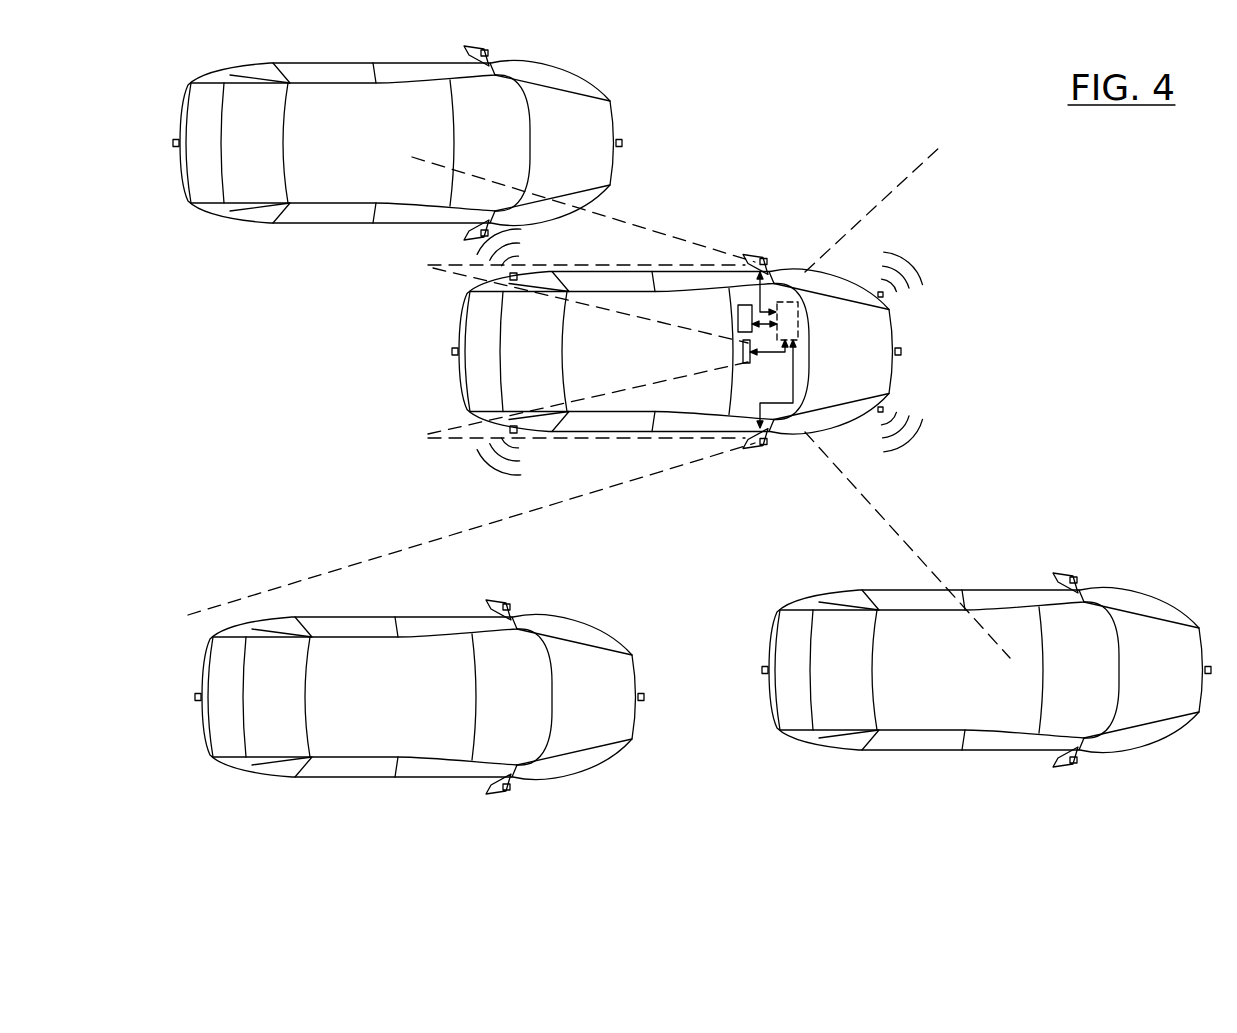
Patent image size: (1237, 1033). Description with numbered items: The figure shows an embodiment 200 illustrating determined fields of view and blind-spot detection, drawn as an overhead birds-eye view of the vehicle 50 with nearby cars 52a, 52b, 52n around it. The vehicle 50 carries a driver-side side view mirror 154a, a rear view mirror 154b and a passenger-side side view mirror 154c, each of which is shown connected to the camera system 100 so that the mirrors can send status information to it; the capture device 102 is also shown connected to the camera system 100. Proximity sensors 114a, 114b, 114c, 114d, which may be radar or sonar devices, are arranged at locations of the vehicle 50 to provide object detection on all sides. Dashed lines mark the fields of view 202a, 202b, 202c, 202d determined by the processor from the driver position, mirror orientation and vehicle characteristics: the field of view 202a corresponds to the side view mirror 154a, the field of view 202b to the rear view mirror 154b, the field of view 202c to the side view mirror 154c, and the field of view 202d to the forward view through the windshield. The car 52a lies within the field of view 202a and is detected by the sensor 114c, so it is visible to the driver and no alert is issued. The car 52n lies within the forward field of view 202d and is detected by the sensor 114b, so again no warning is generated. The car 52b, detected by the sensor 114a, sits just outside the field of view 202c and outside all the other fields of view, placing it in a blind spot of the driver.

The embodiment 200 is at (838, 92).
The vehicle 50 is at (829, 270).
The car 52a is at (289, 222).
The car 52b is at (582, 618).
The car 52n is at (1140, 587).
The camera system 100 is at (800, 323).
The capture device 102 is at (737, 305).
The sensor 114a is at (520, 437).
The sensor 114b is at (887, 404).
The sensor 114c is at (519, 267).
The sensor 114d is at (887, 300).
The side view mirror 154a is at (753, 258).
The rear view mirror 154b is at (752, 364).
The side view mirror 154c is at (753, 447).
The field of view 202a is at (612, 216).
The field of view 202b is at (464, 430).
The field of view 202c is at (443, 538).
The field of view 202d is at (907, 183).